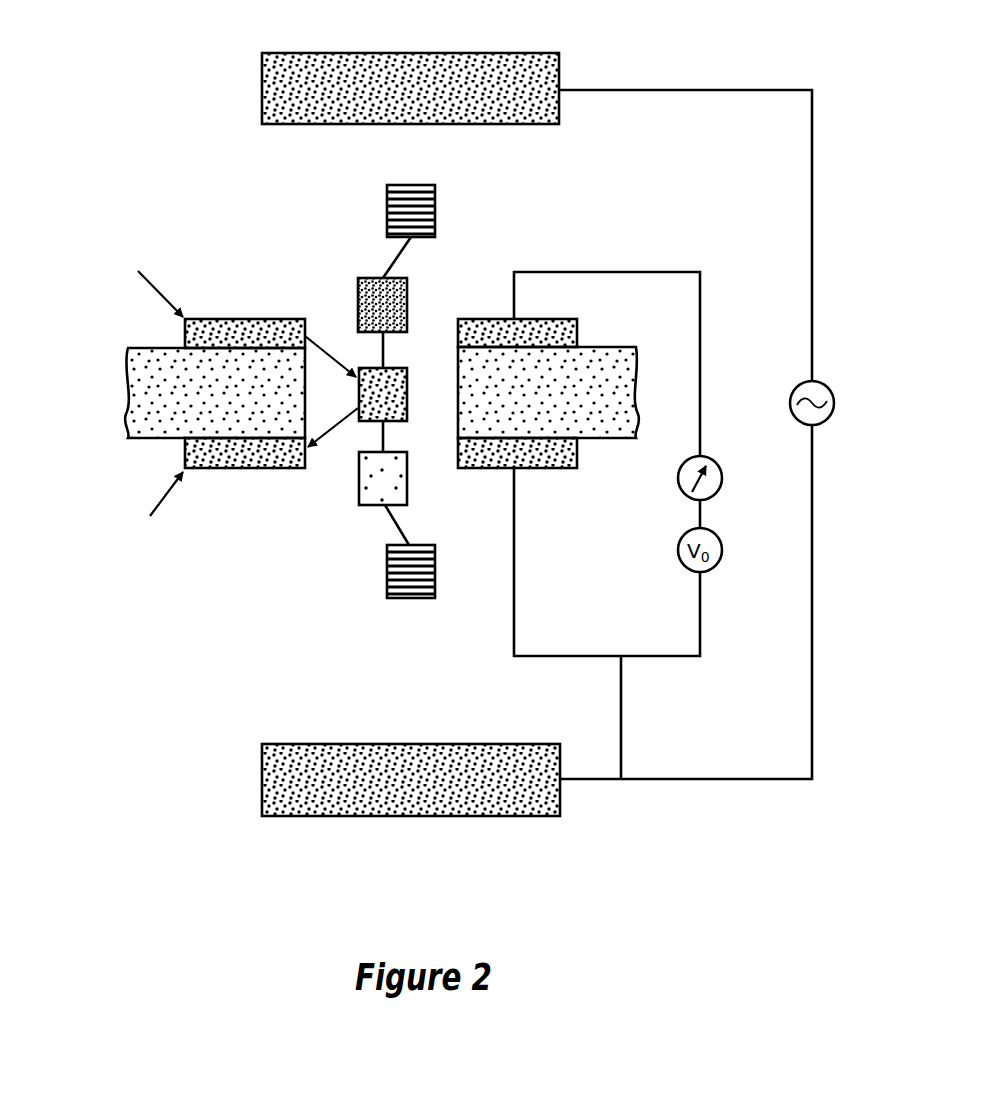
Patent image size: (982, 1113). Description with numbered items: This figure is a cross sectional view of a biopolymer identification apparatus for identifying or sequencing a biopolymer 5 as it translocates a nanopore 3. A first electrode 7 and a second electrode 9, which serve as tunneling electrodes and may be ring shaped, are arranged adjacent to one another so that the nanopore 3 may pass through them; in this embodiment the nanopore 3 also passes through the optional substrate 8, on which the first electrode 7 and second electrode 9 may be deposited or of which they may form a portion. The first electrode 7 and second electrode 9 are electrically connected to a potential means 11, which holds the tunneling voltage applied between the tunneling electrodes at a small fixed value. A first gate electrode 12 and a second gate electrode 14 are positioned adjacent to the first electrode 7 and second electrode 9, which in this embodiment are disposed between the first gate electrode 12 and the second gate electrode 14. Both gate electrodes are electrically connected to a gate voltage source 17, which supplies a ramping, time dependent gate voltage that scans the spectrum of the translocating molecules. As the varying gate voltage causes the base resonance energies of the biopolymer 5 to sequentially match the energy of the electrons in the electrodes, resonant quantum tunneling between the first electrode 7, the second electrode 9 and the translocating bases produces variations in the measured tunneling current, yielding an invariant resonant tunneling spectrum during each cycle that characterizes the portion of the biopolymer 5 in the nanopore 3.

The nanopore 3 is at (342, 334).
The biopolymer 5 is at (434, 212).
The first electrode 7 is at (577, 319).
The optional substrate 8 is at (128, 348).
The second electrode 9 is at (577, 468).
The potential means 11 is at (718, 460).
The first gate electrode 12 is at (517, 53).
The second gate electrode 14 is at (517, 744).
The gate voltage source 17 is at (812, 381).